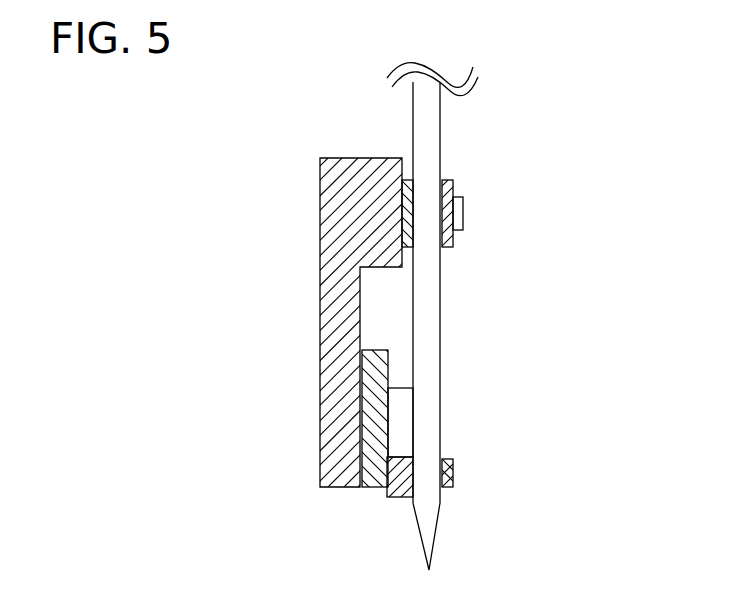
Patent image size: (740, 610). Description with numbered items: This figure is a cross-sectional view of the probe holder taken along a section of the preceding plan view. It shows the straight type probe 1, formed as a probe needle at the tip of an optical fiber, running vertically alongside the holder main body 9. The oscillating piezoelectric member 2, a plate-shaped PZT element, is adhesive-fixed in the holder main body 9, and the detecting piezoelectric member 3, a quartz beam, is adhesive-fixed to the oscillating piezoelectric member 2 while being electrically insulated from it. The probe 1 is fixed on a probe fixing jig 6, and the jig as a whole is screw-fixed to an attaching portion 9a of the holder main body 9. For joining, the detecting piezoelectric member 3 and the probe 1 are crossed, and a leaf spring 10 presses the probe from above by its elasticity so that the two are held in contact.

The probe 1 is at (428, 520).
The oscillating piezoelectric member 2 is at (375, 392).
The detecting piezoelectric member 3 is at (398, 413).
The probe fixing jig 6 is at (452, 188).
The holder main body 9 is at (340, 292).
The attaching portion 9a is at (392, 207).
The leaf spring 10 is at (443, 472).